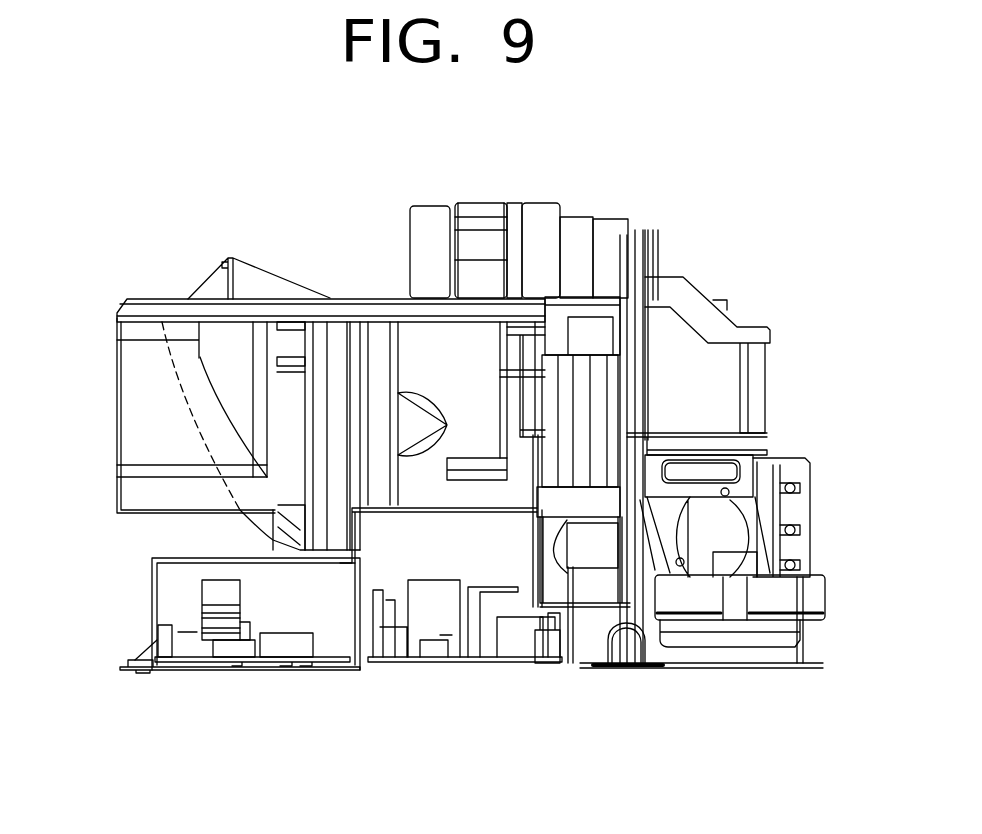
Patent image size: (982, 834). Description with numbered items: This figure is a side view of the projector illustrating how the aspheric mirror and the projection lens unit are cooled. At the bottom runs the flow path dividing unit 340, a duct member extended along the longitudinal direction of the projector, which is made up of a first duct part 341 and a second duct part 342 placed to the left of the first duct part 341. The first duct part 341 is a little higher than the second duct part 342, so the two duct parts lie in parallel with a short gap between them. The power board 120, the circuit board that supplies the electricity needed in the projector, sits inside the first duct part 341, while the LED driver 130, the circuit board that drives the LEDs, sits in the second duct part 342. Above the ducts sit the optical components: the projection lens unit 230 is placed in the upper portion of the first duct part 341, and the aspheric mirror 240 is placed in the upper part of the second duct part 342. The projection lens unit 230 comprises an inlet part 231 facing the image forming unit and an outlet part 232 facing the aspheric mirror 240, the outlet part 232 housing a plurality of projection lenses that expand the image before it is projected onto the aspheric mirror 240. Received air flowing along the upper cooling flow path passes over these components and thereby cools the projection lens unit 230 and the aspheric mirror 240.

The power board 120 is at (417, 662).
The LED driver 130 is at (192, 660).
The projection lens unit 230 is at (680, 408).
The inlet part 231 is at (750, 333).
The outlet part 232 is at (480, 208).
The aspheric mirror 240 is at (183, 412).
The flow path dividing unit 340 is at (203, 604).
The first duct part 341 is at (462, 497).
The second duct part 342 is at (176, 557).